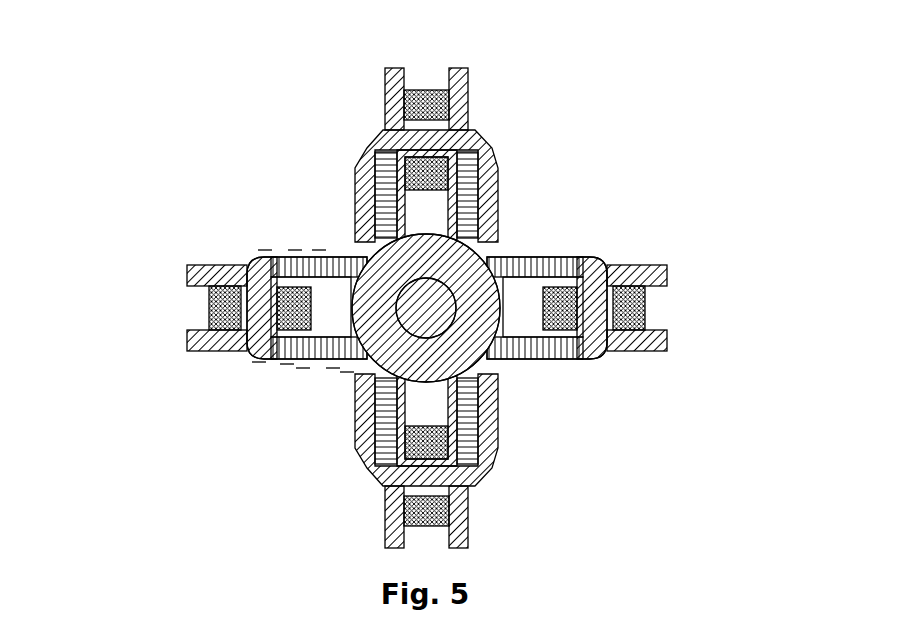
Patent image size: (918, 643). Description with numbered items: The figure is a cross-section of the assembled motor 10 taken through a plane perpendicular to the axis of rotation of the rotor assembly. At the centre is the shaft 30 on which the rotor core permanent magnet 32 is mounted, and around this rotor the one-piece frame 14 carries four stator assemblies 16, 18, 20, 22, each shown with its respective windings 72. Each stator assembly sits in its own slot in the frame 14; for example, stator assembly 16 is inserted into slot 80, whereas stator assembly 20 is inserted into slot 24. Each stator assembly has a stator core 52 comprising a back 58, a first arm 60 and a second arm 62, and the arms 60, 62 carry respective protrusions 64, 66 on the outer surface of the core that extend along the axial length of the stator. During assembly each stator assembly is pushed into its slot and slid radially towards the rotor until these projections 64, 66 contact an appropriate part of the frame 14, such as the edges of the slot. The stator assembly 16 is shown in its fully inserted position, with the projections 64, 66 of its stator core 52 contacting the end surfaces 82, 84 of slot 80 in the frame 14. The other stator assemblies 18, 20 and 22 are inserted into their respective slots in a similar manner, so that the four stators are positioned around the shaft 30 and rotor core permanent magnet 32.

The motor 10 is at (226, 124).
The frame 14 is at (368, 168).
The stator assembly 16 is at (126, 318).
The stator assembly 18 is at (490, 69).
The stator assembly 20 is at (718, 334).
The stator assembly 22 is at (516, 507).
The slot 24 is at (548, 278).
The shaft 30 is at (438, 296).
The rotor core permanent magnet 32 is at (476, 343).
The stator core 52 is at (258, 362).
The back 58 is at (250, 258).
The first arm 60 is at (347, 376).
The second arm 62 is at (318, 254).
The protrusion 64 is at (287, 368).
The protrusion 66 is at (266, 252).
The windings 72 is at (428, 100).
The slot 80 is at (332, 373).
The end surface 82 is at (302, 374).
The end surface 84 is at (296, 250).